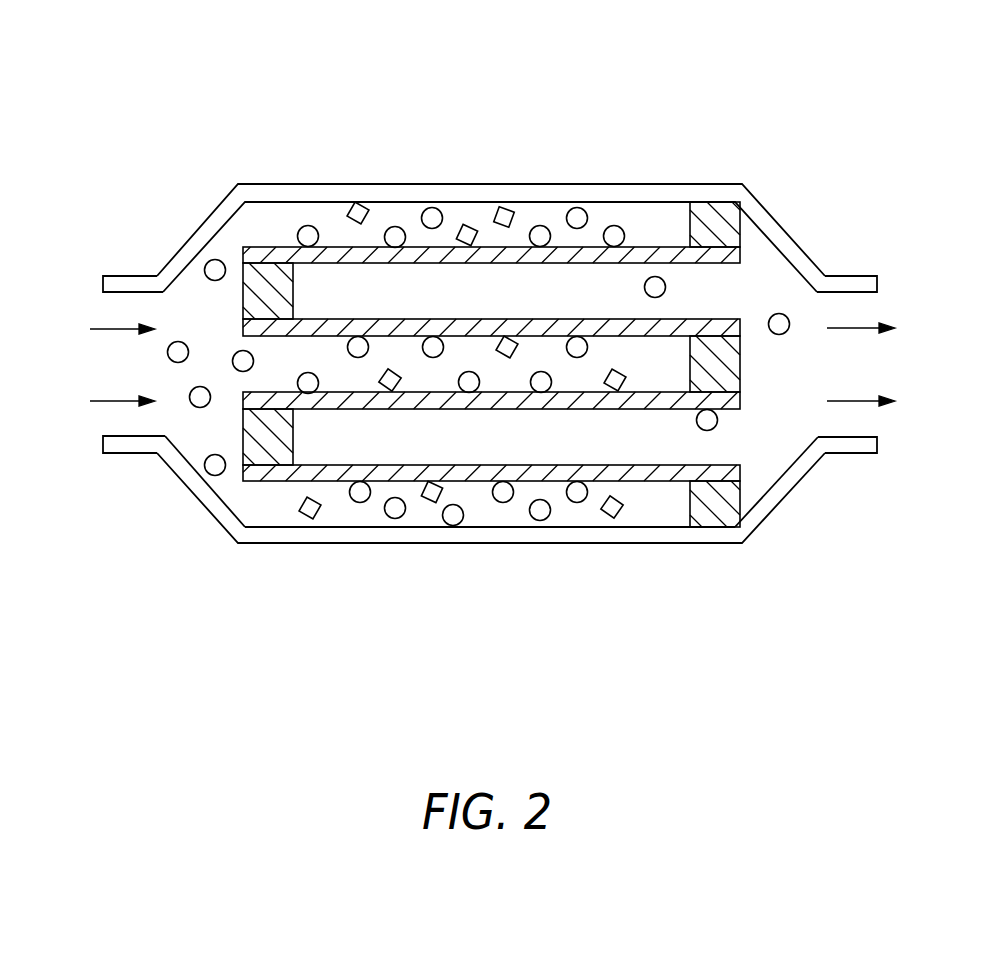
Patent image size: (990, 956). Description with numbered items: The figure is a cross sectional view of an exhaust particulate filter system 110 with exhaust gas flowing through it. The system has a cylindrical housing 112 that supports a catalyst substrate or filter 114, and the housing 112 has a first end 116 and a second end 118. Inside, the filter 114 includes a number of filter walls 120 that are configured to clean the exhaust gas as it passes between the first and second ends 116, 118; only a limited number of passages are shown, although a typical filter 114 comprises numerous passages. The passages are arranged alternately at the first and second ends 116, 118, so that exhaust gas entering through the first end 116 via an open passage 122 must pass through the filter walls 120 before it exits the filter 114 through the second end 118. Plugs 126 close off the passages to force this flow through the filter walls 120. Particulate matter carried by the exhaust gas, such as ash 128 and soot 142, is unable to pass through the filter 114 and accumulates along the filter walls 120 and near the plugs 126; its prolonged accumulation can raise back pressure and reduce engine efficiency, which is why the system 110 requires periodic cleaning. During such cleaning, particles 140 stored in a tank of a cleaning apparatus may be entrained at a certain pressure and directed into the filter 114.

The exhaust particulate filter system 110 is at (821, 94).
The cylindrical housing 112 is at (557, 184).
The filter 114 is at (775, 268).
The first end 116 is at (80, 254).
The second end 118 is at (895, 259).
The filter walls 120 is at (437, 328).
The open passage 122 is at (291, 365).
The plugs 126 is at (712, 218).
The ash 128 is at (580, 213).
The particles 140 is at (488, 521).
The soot 142 is at (500, 210).